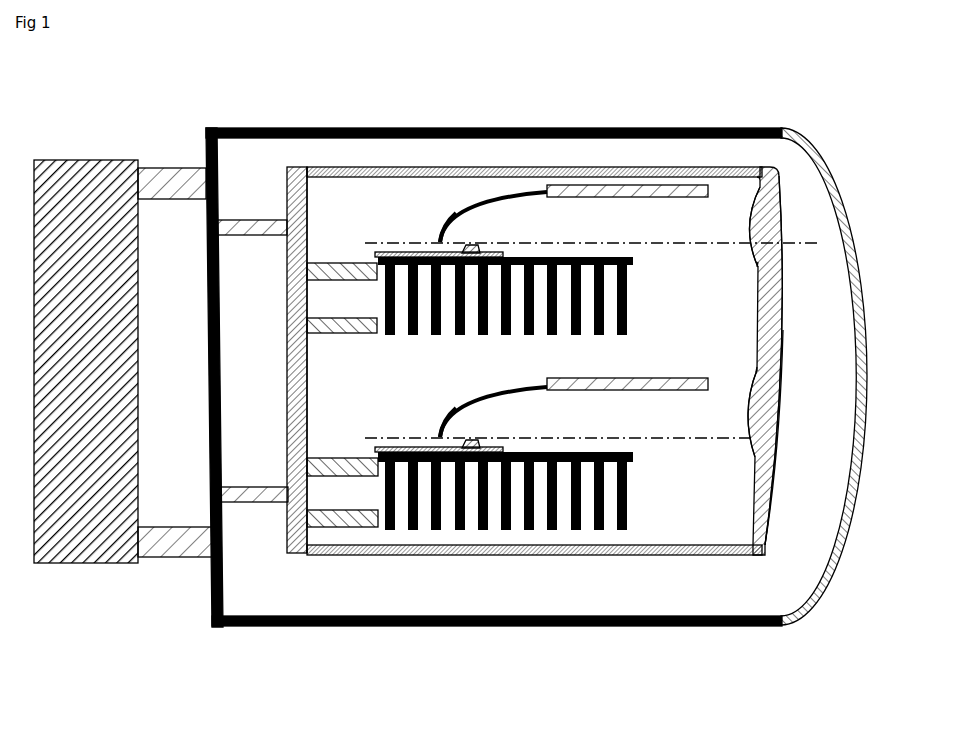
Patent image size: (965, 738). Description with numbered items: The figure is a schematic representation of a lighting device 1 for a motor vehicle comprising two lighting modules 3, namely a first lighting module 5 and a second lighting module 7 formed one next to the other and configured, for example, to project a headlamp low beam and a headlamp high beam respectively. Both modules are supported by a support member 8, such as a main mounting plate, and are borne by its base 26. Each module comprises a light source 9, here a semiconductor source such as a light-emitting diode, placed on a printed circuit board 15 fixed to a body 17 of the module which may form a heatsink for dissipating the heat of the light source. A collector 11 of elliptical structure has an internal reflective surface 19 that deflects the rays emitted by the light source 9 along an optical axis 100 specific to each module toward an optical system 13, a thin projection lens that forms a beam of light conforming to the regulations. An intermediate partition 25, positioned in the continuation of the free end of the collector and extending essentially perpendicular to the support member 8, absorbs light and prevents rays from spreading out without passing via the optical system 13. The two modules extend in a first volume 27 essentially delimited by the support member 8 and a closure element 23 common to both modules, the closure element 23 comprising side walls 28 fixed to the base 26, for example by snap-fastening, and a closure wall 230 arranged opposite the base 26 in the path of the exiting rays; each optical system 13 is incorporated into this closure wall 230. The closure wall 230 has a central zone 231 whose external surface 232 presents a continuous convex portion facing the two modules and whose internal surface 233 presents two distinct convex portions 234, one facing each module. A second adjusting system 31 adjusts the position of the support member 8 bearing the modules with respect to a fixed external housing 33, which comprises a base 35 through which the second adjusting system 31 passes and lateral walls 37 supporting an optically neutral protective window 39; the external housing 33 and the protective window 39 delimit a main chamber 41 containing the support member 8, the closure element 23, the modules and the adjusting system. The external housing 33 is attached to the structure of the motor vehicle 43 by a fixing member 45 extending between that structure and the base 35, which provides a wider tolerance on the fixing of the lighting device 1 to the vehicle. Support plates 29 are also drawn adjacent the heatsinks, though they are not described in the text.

The lighting device 1 is at (195, 685).
The lighting module 3 is at (514, 356).
The first lighting module 5 is at (414, 406).
The second lighting module 7 is at (414, 212).
The support member 8 is at (289, 162).
The light source 9 is at (477, 246).
The collector 11 is at (486, 200).
The optical system 13 is at (745, 243).
The printed circuit board 15 is at (400, 252).
The body 17 is at (635, 261).
The reflective surface 19 is at (461, 214).
The closure element 23 is at (448, 162).
The intermediate partition 25 is at (668, 190).
The base 26 is at (303, 228).
The first volume 27 is at (656, 533).
The side wall 28 is at (395, 166).
The support plate 29 is at (352, 333).
The second adjusting system 31 is at (233, 240).
The external housing 33 is at (513, 126).
The base 35 is at (221, 205).
The lateral wall 37 is at (586, 128).
The protective window 39 is at (848, 215).
The main chamber 41 is at (489, 604).
The structure of the motor vehicle 43 is at (75, 160).
The fixing member 45 is at (157, 168).
The optical axis 100 is at (790, 243).
The closure wall 230 is at (788, 289).
The central zone 231 is at (790, 341).
The external surface 232 is at (784, 373).
The internal surface 233 is at (755, 357).
The convex portion 234 is at (750, 263).